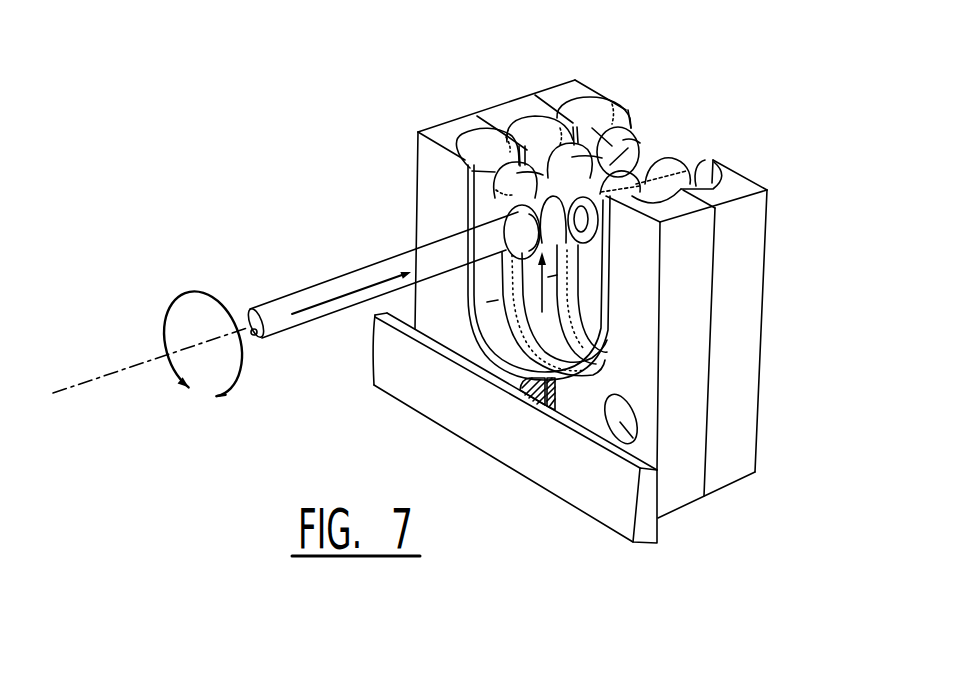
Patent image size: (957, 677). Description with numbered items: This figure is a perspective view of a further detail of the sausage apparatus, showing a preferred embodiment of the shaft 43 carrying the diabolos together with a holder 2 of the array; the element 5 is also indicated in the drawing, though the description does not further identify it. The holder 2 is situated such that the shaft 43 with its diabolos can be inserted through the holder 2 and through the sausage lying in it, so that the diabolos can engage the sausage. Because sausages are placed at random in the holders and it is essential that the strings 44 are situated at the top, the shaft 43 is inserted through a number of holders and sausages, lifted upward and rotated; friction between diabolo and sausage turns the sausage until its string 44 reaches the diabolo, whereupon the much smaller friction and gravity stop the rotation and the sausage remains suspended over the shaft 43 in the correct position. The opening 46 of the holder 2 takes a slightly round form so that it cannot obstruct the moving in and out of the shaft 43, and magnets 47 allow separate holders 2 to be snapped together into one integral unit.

The holder 2 is at (762, 213).
The ring 5 is at (628, 140).
The shaft 43 is at (355, 281).
The string 44 is at (643, 150).
The opening 46 is at (612, 335).
The magnet 47 is at (636, 443).